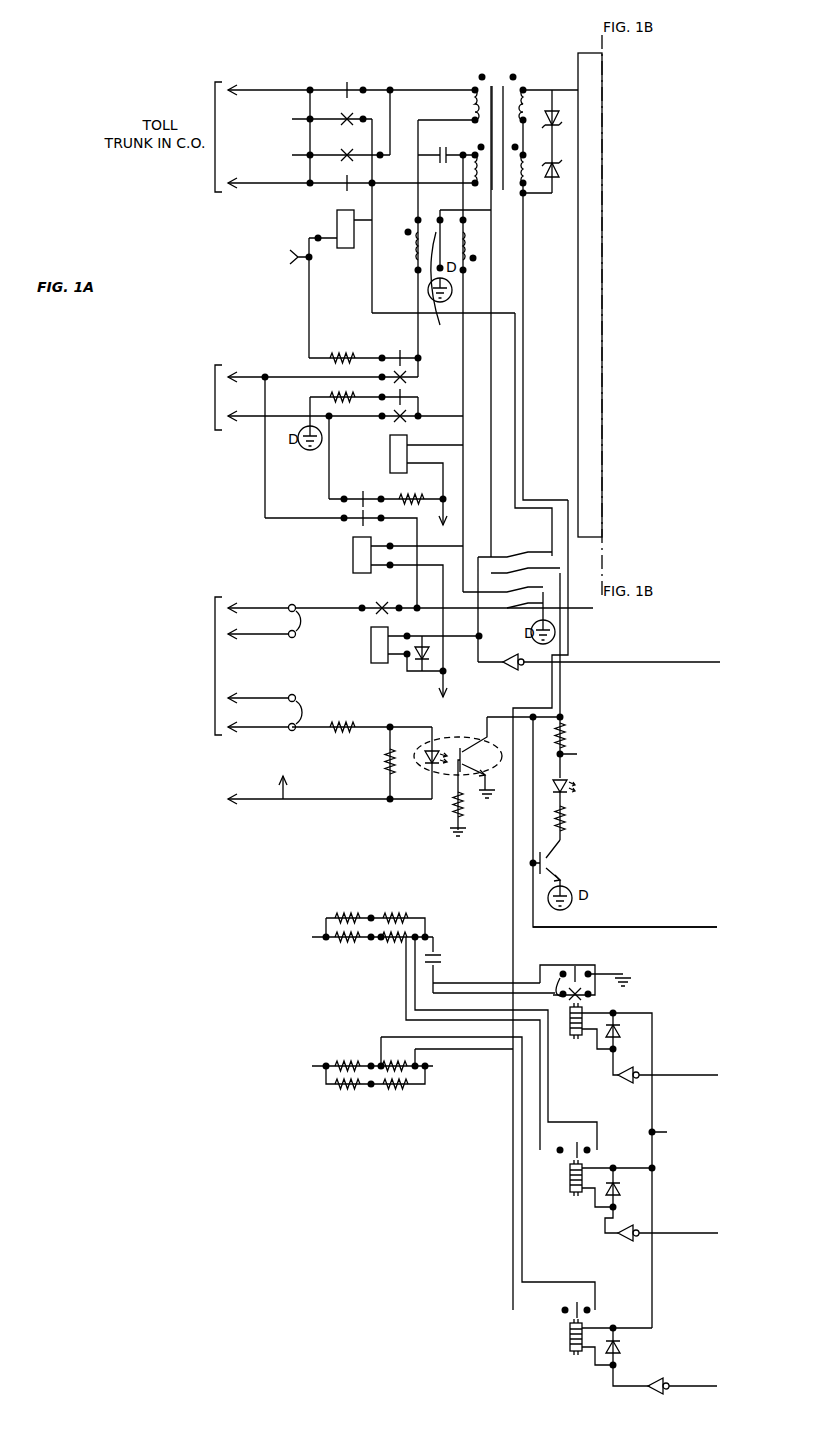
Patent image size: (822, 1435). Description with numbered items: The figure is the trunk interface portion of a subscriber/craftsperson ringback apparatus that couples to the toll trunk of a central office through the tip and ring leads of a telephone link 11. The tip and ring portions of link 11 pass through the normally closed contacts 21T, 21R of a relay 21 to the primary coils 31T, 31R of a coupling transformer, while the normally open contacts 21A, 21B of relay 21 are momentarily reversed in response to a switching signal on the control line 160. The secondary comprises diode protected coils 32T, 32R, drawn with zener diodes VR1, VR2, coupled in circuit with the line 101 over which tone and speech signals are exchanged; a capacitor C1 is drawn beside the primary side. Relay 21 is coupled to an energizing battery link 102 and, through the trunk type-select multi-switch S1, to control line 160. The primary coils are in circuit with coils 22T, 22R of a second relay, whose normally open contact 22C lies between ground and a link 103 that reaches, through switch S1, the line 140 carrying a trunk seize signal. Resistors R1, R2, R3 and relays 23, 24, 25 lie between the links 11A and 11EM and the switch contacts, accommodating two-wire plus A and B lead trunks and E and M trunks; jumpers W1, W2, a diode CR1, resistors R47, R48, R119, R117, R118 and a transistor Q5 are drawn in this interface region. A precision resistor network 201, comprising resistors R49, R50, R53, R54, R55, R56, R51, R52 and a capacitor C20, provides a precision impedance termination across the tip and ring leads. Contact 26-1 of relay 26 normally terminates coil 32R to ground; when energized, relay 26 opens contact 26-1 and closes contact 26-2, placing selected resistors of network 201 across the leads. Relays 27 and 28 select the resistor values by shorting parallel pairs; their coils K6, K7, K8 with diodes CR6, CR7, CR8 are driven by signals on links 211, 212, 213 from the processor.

The telephone link 11 is at (278, 145).
The normally closed tip contact of relay 21 21T is at (347, 84).
The normally open contact of relay 21 21A is at (348, 124).
The normally open contact of relay 21 21B is at (348, 158).
The normally closed ring contact of relay 21 21R is at (347, 190).
The primary coil of coupling transformer 31T is at (490, 82).
The primary coil of coupling transformer 31R is at (481, 188).
The secondary coil of coupling transformer 32T is at (511, 82).
The secondary coil of coupling transformer 32R is at (526, 198).
The zener diode VR1 is at (563, 125).
The zener diode VR2 is at (563, 162).
The line 101 is at (578, 326).
The capacitor C1 is at (443, 147).
The coil of relay 22 22T is at (412, 246).
The coil of relay 22 22R is at (470, 244).
The contact of relay 22 22C is at (450, 283).
The relay 21 is at (348, 250).
The energizing battery link 102 is at (309, 313).
The link 103 is at (491, 380).
The resistor R1 is at (365, 351).
The resistor R2 is at (364, 401).
The link 11A is at (323, 441).
The relay 23 is at (390, 447).
The resistor R3 is at (388, 501).
The relay 24 is at (356, 545).
The trunk type-select multi-switch S1 is at (515, 551).
The control line 160 is at (720, 664).
The link 11EM is at (382, 700).
The jumper W1 is at (308, 621).
The jumper W2 is at (308, 713).
The relay 25 is at (371, 655).
The diode CR1 is at (429, 646).
The resistor R47 is at (362, 752).
The resistor R48 is at (372, 765).
The resistor R119 is at (477, 813).
The line 140 is at (670, 928).
The resistor R117 is at (579, 747).
The resistor R118 is at (579, 816).
The transistor Q5 is at (551, 875).
The precision resistor network 201 is at (345, 1009).
The resistor R49 is at (348, 910).
The resistor R50 is at (397, 910).
The resistor R53 is at (348, 947).
The resistor R54 is at (391, 952).
The capacitor C20 is at (449, 959).
The resistor R55 is at (348, 1058).
The resistor R56 is at (397, 1058).
The resistor R51 is at (348, 1091).
The resistor R52 is at (397, 1091).
The contact of relay 26 26-2 is at (563, 972).
The contact of relay 26 26-1 is at (580, 968).
The relay 26 is at (568, 1022).
The relay coil K6 is at (617, 1169).
The diode CR6 is at (628, 1031).
The link 211 is at (683, 1075).
The relay 27 is at (568, 1178).
The relay coil K7 is at (612, 1191).
The diode CR7 is at (628, 1187).
The link 212 is at (680, 1233).
The relay 28 is at (568, 1338).
The relay coil K8 is at (610, 1350).
The diode CR8 is at (628, 1346).
The link 213 is at (683, 1386).